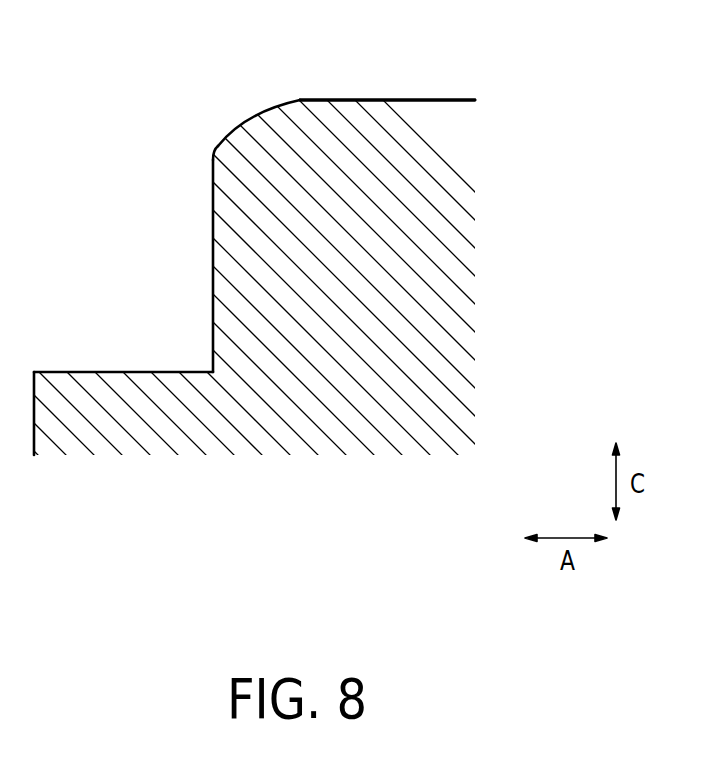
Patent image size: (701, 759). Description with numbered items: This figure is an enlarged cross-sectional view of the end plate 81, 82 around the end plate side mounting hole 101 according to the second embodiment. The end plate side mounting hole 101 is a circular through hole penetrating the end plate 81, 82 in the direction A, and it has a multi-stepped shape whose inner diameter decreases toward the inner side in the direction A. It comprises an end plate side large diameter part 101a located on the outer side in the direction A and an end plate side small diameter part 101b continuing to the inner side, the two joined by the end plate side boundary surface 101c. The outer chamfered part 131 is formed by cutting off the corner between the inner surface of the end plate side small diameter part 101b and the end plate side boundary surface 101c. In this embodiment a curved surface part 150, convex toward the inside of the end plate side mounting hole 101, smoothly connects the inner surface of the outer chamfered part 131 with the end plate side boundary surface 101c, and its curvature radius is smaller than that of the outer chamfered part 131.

The end plate side mounting hole 101 is at (333, 519).
The end plate side large diameter part 101a is at (145, 372).
The end plate side small diameter part 101b is at (360, 100).
The end plate side boundary surface 101c is at (213, 313).
The outer chamfered part 131 is at (264, 114).
The curved surface part 150 is at (214, 150).
The first end plate 81 is at (445, 99).
The second end plate 82 is at (416, 57).